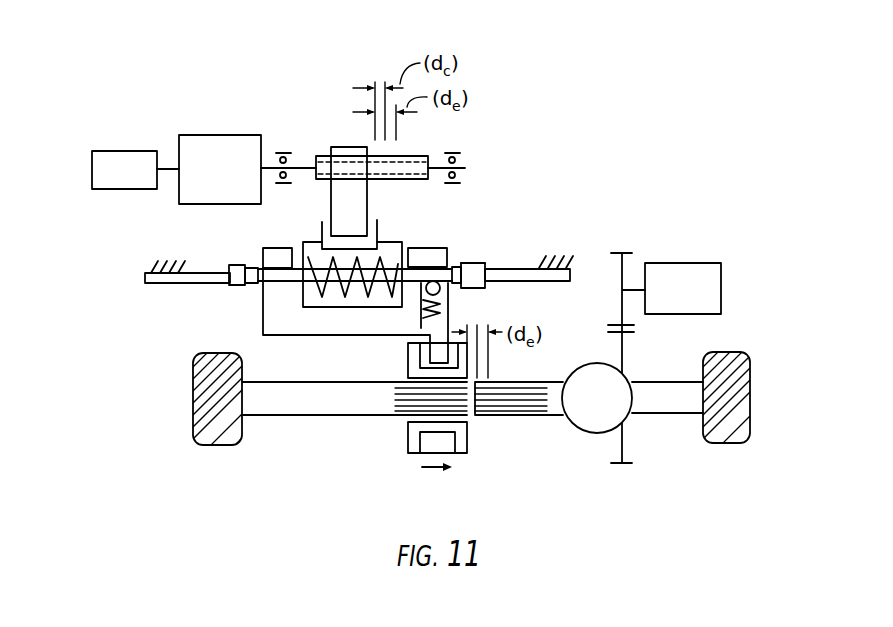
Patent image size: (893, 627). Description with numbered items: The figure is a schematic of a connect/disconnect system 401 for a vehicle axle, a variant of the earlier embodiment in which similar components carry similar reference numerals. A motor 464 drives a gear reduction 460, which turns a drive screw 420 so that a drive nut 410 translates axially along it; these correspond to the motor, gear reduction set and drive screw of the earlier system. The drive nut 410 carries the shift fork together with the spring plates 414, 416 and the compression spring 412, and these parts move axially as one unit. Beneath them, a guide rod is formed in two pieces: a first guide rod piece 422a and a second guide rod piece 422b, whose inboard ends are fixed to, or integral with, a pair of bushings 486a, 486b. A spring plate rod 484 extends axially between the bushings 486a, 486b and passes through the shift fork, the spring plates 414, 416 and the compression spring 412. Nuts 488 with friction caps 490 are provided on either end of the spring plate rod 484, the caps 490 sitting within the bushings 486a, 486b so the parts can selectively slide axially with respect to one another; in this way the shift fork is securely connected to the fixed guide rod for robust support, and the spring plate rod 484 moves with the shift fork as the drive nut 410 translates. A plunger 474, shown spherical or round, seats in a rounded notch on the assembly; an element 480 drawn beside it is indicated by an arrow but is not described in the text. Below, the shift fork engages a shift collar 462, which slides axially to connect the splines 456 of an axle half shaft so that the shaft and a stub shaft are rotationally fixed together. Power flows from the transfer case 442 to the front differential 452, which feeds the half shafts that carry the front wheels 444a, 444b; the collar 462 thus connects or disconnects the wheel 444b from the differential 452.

The connect/disconnect system 401 is at (86, 124).
The controller 464 is at (123, 151).
The actuator motor 460 is at (222, 135).
The drive nut 410 is at (340, 147).
The actuator shaft 420 is at (407, 155).
The spring plate 416 is at (382, 243).
The spring plate rod 484 is at (413, 263).
The nuts 488 is at (474, 262).
The friction caps 490 is at (256, 290).
The plunger 474 is at (440, 278).
The first guide rod piece 422a is at (528, 268).
The second guide rod piece 422b is at (203, 273).
The spring plate 414 is at (303, 245).
The bushing 486a is at (485, 285).
The bushing 486b is at (233, 285).
The compression spring 412 is at (308, 301).
The detent spring 480 is at (411, 320).
The drive motor 442 is at (722, 290).
The differential 452 is at (580, 411).
The wheel 444a is at (730, 443).
The wheel 444b is at (212, 446).
The shift fork 462 is at (407, 437).
The clutch plate 456 is at (518, 404).